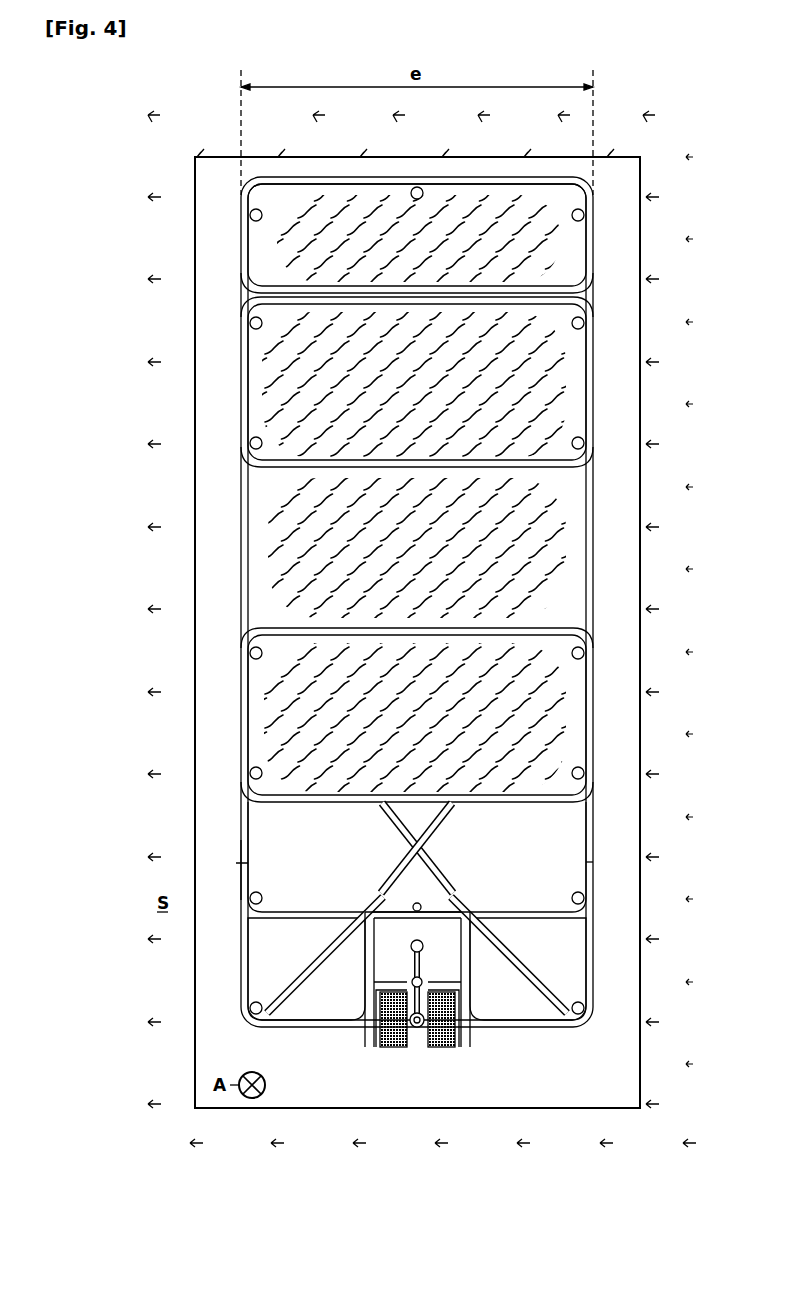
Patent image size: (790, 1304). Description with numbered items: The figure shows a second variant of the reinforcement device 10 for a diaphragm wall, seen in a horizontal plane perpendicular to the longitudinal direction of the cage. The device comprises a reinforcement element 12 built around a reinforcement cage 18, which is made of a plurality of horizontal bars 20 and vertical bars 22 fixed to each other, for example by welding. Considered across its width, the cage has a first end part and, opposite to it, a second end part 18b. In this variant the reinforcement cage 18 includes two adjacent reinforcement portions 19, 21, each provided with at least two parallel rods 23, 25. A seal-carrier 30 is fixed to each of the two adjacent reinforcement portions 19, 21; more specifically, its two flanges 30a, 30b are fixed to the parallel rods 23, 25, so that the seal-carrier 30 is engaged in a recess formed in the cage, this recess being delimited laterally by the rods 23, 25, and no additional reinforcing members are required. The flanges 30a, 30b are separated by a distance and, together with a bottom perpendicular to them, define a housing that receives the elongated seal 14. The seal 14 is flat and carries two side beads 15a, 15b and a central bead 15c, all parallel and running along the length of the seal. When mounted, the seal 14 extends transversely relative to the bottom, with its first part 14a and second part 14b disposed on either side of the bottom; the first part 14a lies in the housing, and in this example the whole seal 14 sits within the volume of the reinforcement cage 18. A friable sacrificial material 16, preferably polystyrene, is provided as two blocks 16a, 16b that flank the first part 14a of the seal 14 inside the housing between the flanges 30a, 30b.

The reinforcement device 10 is at (227, 404).
The reinforcement element 12 is at (239, 863).
The seal 14 is at (429, 985).
The first part of the seal 14a is at (411, 1035).
The second part of the seal 14b is at (412, 975).
The side bead 15a is at (428, 1032).
The side bead 15b is at (424, 975).
The central bead 15c is at (411, 943).
The sacrificial material 16 is at (417, 1037).
The block of sacrificial material 16a is at (378, 1000).
The block of sacrificial material 16b is at (456, 1000).
The reinforcement cage 18 is at (236, 560).
The second end part 18b is at (191, 210).
The reinforcement portion 19 is at (242, 1018).
The horizontal bar 20 is at (529, 916).
The reinforcement portion 21 is at (592, 1018).
The vertical bar 22 is at (572, 653).
The parallel rod 23 is at (362, 962).
The parallel rod 25 is at (474, 962).
The seal-carrier 30 is at (421, 1003).
The flange 30a is at (367, 1046).
The flange 30b is at (473, 1044).